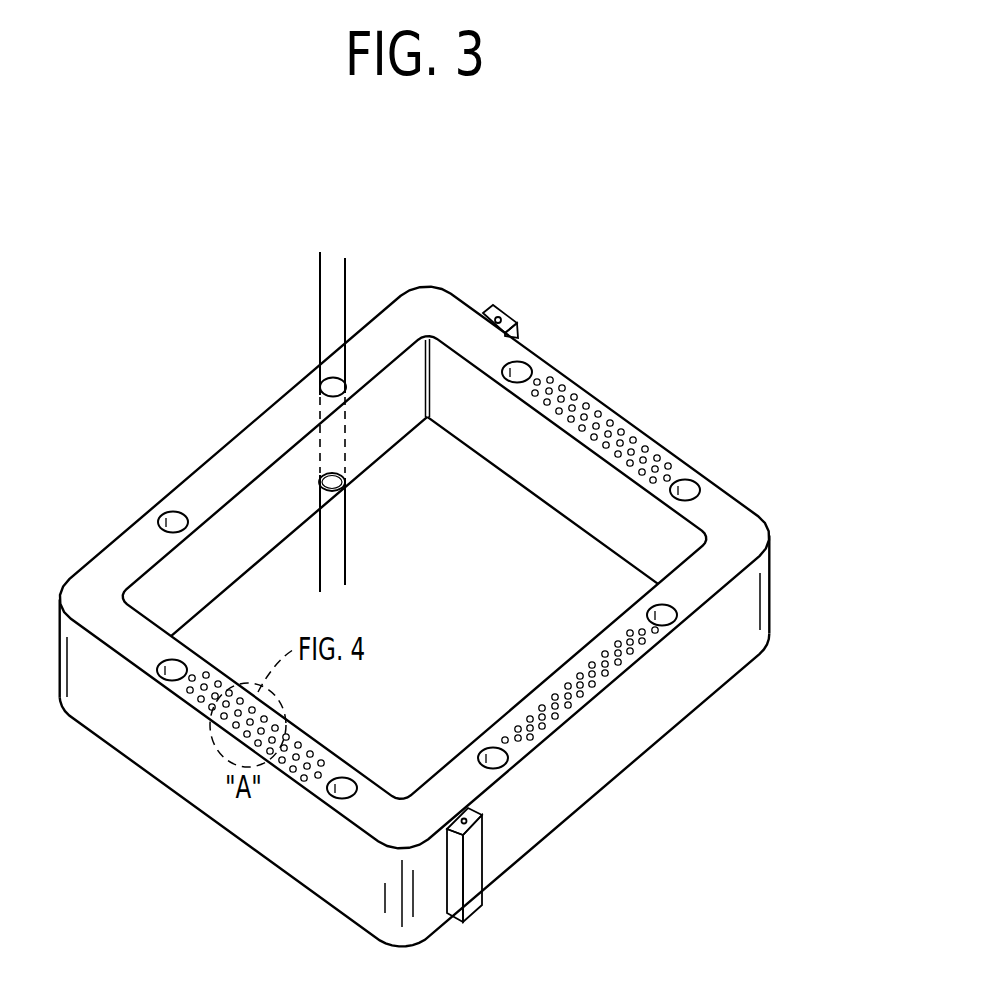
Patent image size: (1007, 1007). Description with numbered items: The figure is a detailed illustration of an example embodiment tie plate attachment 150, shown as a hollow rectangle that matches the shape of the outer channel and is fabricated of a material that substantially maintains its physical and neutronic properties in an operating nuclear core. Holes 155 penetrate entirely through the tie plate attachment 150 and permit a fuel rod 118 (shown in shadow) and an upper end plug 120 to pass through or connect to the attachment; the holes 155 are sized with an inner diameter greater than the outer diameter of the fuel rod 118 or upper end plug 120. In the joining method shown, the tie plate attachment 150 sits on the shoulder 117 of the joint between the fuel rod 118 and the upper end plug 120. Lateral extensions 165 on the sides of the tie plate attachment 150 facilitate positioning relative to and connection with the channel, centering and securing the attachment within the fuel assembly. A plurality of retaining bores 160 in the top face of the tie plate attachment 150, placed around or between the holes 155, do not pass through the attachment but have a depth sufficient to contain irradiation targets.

The tie plate attachment 150 is at (636, 798).
The holes 155 is at (669, 608).
The retaining bores 160 is at (590, 685).
The lateral extensions 165 is at (500, 313).
The upper end plug 120 is at (320, 300).
The shoulder 117 is at (321, 486).
The fuel rod 118 is at (333, 545).